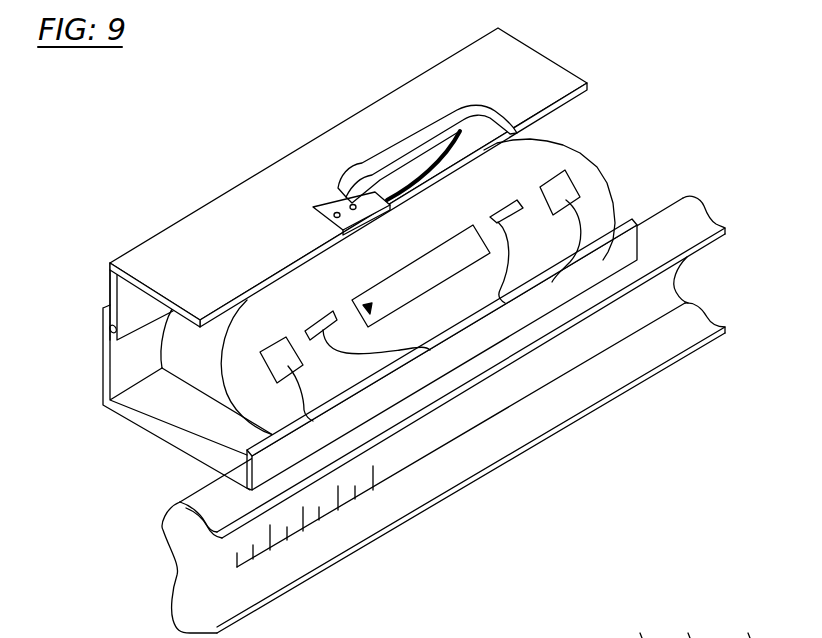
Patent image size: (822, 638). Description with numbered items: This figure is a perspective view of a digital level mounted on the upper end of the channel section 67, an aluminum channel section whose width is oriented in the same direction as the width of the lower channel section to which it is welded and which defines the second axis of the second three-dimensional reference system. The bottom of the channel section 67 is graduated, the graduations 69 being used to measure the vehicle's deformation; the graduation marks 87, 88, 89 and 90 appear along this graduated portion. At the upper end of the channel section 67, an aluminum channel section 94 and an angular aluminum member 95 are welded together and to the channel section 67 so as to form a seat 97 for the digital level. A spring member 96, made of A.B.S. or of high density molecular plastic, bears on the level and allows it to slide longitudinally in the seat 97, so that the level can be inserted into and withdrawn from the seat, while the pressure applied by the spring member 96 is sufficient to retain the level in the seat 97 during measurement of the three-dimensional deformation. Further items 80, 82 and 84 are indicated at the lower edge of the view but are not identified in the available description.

The channel section 67 is at (633, 386).
The graduations 69 is at (217, 563).
The rail portion 80 is at (687, 624).
The rail portion 82 is at (751, 624).
The rail portion 84 is at (636, 624).
The scale graduation 87 is at (356, 482).
The scale graduation 88 is at (322, 503).
The scale graduation 89 is at (288, 523).
The scale graduation 90 is at (253, 546).
The aluminum channel section 94 is at (107, 393).
The angular aluminum member 95 is at (220, 217).
The spring member 96 is at (428, 160).
The seat 97 is at (122, 302).